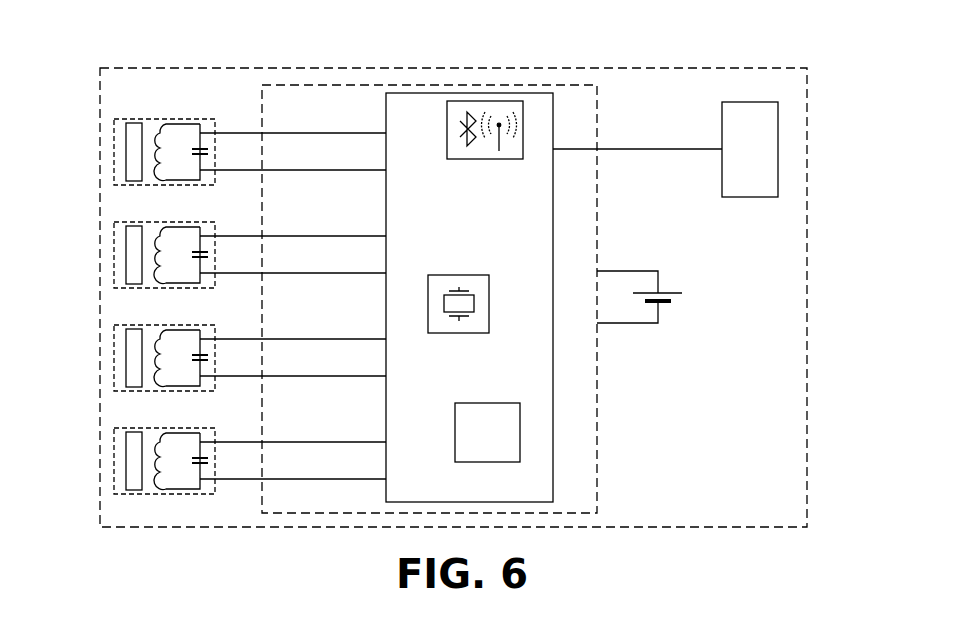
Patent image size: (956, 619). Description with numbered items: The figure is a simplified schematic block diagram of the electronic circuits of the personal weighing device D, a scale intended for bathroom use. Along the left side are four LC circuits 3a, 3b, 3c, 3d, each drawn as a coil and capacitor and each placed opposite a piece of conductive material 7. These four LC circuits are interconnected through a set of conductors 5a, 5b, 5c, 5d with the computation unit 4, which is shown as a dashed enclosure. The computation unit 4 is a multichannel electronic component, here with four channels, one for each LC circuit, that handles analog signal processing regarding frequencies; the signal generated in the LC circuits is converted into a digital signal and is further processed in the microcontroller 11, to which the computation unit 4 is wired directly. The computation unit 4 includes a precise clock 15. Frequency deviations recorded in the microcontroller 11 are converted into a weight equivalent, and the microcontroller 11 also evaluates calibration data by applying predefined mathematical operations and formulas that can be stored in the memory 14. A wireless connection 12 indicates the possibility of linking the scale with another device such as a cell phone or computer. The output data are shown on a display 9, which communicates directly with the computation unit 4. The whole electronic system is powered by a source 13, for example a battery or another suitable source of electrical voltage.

The personal weighing device D is at (165, 68).
The computation unit 4 is at (312, 85).
The microcontroller 11 is at (535, 93).
The wireless connection 12 is at (463, 159).
The precise clock 15 is at (472, 275).
The memory 14 is at (503, 403).
The display 9 is at (665, 149).
The source 13 is at (675, 295).
The LC circuit 3a is at (185, 121).
The LC circuit 3b is at (185, 224).
The LC circuit 3c is at (185, 327).
The LC circuit 3d is at (185, 430).
The conductive material 7 is at (126, 143).
The conductor 5a is at (229, 171).
The conductor 5b is at (229, 274).
The conductor 5c is at (229, 377).
The conductor 5d is at (235, 480).